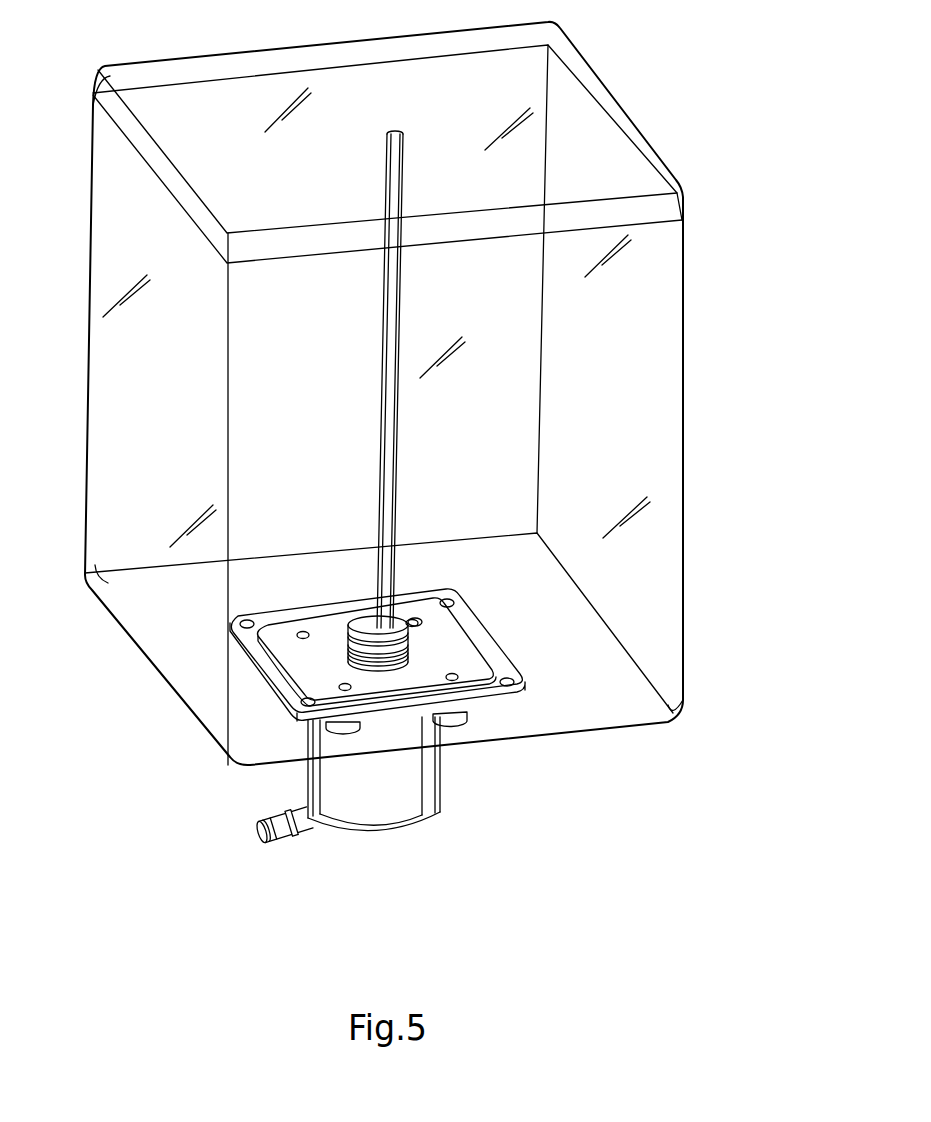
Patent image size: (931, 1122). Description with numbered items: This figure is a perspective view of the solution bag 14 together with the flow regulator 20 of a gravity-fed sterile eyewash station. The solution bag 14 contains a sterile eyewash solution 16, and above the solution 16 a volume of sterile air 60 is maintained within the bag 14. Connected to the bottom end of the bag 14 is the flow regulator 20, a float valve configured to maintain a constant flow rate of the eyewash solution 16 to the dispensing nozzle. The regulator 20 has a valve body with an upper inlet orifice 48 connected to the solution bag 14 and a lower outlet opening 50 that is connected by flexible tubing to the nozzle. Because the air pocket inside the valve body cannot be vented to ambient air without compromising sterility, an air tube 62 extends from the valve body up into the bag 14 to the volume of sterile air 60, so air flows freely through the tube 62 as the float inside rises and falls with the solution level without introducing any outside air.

The solution bag 14 is at (684, 372).
The sterile eyewash solution 16 is at (522, 342).
The flow regulator 20 is at (390, 808).
The upper inlet orifice 48 is at (310, 622).
The lower outlet opening 50 is at (285, 833).
The volume of sterile air 60 is at (605, 217).
The air tube 62 is at (382, 405).